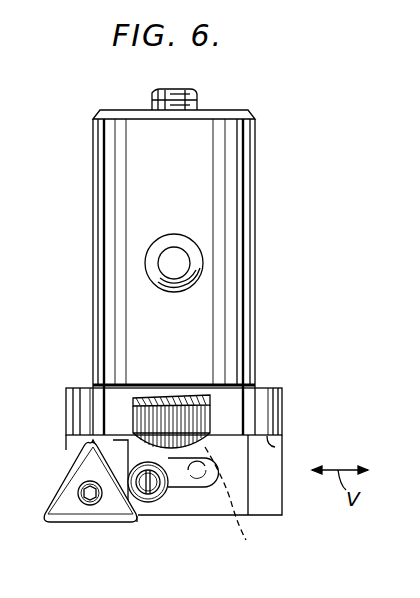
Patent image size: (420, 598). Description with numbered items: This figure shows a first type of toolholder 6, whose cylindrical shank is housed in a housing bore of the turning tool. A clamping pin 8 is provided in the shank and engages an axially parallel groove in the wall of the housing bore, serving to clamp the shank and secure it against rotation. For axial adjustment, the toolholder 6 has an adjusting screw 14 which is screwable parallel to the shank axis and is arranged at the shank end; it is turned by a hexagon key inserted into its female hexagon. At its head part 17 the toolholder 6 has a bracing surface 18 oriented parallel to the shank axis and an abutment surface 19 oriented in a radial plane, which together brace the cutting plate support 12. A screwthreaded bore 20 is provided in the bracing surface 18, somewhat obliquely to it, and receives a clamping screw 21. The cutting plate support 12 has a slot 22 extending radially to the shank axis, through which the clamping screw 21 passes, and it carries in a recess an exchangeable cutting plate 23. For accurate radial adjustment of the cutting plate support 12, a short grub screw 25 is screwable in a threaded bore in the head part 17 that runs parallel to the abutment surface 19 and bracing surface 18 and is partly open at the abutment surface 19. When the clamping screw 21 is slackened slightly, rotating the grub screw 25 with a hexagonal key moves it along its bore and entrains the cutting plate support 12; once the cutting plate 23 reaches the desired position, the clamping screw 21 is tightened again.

The toolholder 6 is at (94, 336).
The clamping pin 8 is at (183, 262).
The cutting plate support 12 is at (215, 503).
The adjusting screw 14 is at (198, 100).
The head part 17 is at (257, 410).
The bracing surface 18 is at (268, 495).
The abutment surface 19 is at (275, 447).
The screwthreaded bore 20 is at (240, 506).
The clamping screw 21 is at (146, 507).
The slot 22 is at (190, 483).
The cutting plate 23 is at (73, 513).
The grub screw 25 is at (148, 395).